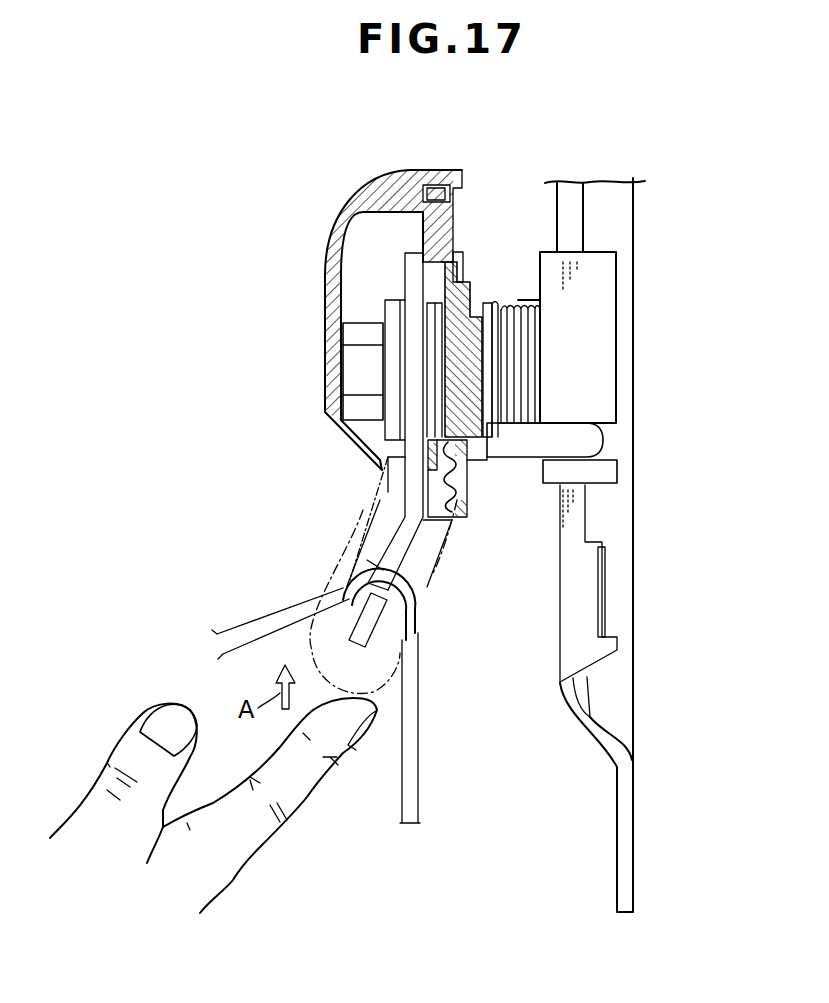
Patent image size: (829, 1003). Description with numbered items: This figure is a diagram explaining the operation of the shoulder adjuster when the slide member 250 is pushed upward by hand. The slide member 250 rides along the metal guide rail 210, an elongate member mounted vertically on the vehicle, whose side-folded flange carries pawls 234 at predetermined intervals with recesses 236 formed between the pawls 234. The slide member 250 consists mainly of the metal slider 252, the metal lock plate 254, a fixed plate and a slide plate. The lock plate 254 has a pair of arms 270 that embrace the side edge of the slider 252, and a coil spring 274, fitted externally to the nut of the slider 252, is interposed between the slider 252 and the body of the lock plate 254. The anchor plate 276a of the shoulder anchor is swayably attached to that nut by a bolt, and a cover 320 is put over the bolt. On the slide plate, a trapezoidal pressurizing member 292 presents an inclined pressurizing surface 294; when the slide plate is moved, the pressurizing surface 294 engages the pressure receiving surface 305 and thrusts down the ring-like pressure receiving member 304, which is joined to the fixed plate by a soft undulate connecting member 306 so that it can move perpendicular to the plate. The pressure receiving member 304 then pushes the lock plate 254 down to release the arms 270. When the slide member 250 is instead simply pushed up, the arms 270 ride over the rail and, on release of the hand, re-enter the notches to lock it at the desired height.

The slide member 250 is at (509, 168).
The cover 320 is at (360, 205).
The pressurizing member 292 is at (440, 283).
The lock plate 254 is at (492, 300).
The slider 252 is at (598, 256).
The coil spring 274 is at (521, 298).
The pressure receiving surface 305 is at (484, 330).
The pressurizing surface 294 is at (501, 343).
The pressure receiving member 304 is at (472, 405).
The arms 270 is at (592, 442).
The undulate connecting member 306 is at (467, 473).
The recesses 236 is at (607, 513).
The pawls 234 is at (593, 567).
The metal guide rail 210 is at (585, 607).
The anchor plate 276a is at (420, 497).